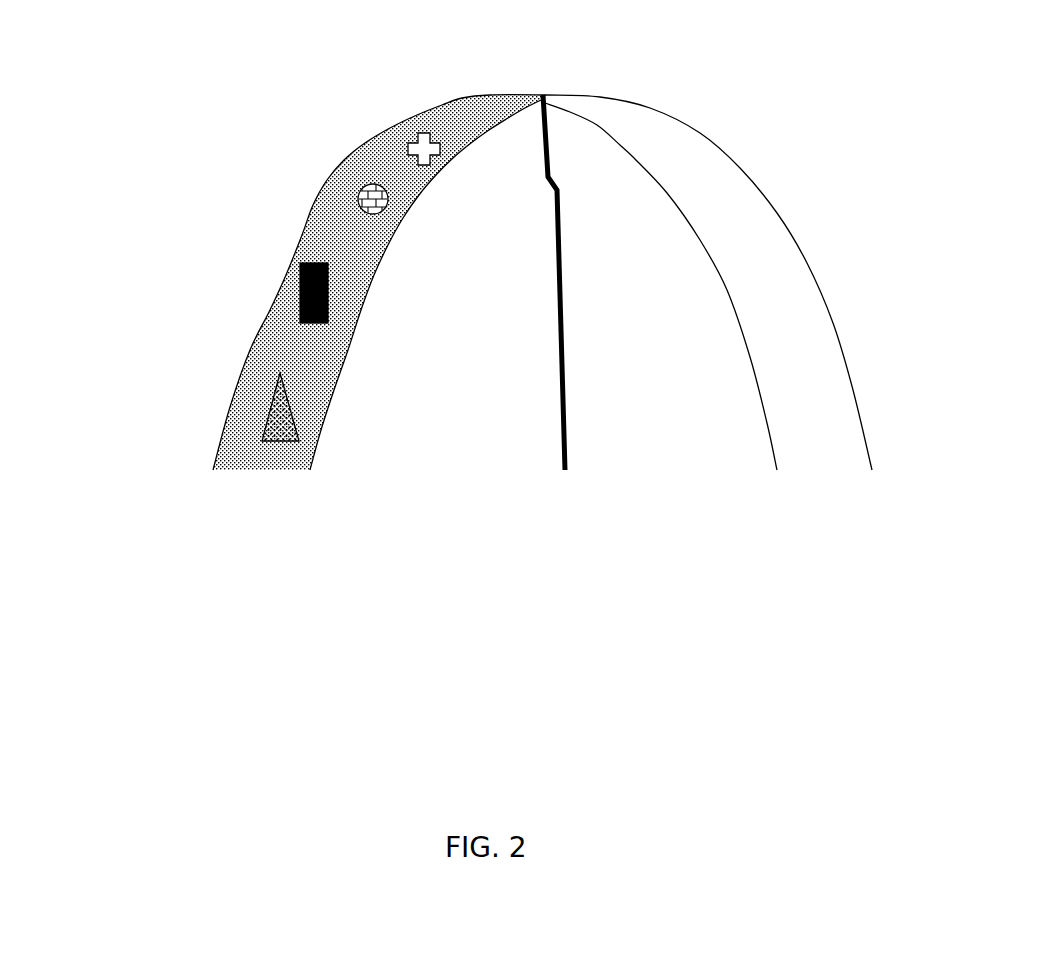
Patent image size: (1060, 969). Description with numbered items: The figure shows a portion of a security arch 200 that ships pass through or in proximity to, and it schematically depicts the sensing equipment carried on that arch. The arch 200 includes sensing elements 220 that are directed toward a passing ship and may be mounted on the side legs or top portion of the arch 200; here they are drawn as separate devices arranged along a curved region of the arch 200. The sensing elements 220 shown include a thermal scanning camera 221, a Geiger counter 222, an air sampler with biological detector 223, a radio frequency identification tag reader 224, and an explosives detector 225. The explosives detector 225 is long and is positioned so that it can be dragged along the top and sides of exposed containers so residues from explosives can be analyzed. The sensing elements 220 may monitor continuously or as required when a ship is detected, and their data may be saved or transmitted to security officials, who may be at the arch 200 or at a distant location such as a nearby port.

The security arch 200 is at (882, 372).
The sensing elements 220 is at (543, 95).
The thermal scanning camera 221 is at (281, 445).
The Geiger counter 222 is at (322, 326).
The air sampler with biological detector 223 is at (379, 218).
The radio frequency identification tag reader 224 is at (428, 178).
The explosives detector 225 is at (566, 493).